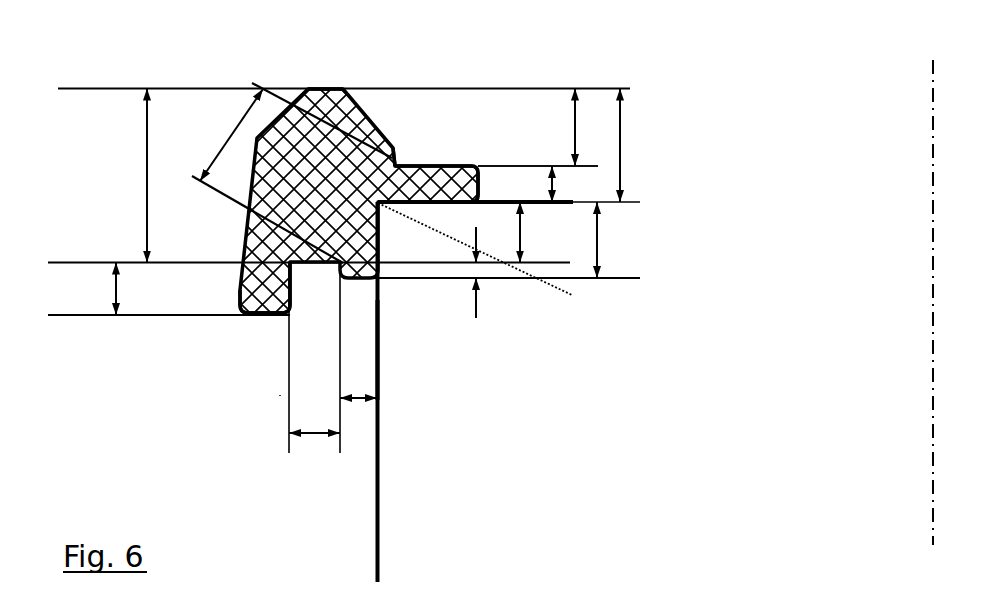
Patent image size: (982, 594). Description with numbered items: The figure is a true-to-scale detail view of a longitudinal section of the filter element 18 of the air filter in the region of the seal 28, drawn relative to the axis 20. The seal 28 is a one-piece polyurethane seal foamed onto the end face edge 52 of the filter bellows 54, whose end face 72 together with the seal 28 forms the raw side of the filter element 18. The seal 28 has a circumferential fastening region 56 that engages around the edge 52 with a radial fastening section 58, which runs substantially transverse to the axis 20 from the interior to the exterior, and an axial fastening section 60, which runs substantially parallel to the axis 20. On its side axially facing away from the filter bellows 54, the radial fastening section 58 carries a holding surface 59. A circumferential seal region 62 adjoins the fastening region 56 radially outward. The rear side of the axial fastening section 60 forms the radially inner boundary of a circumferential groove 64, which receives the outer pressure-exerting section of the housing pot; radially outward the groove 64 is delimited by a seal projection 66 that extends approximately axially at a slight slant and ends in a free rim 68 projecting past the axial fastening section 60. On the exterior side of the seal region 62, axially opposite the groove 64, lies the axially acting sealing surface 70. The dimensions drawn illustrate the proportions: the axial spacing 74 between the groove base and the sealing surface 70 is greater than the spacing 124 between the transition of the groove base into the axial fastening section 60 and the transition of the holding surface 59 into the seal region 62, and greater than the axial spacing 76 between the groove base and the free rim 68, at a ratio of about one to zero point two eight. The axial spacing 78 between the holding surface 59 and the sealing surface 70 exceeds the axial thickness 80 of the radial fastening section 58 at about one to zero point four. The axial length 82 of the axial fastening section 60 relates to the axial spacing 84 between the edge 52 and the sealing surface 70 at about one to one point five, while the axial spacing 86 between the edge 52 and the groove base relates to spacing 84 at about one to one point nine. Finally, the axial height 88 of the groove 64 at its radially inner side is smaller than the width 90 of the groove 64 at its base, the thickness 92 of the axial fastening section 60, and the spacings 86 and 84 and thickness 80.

The filter element 18 is at (78, 52).
The axis 20 is at (933, 135).
The seal 28 is at (262, 117).
The end face edge 52 is at (378, 213).
The filter bellows 54 is at (580, 518).
The fastening region 56 is at (378, 267).
The radial fastening section 58 is at (436, 165).
The holding surface 59 is at (428, 165).
The axial fastening section 60 is at (378, 330).
The seal region 62 is at (305, 190).
The groove 64 is at (312, 265).
The seal projection 66 is at (230, 293).
The free rim 68 is at (262, 313).
The sealing surface 70 is at (325, 88).
The end face 72 is at (532, 165).
The axial spacing 74 is at (145, 153).
The axial spacing 76 is at (113, 291).
The axial spacing 78 is at (573, 120).
The axial thickness 80 is at (554, 182).
The axial length 82 is at (599, 235).
The axial spacing 84 is at (622, 115).
The axial spacing 86 is at (522, 232).
The axial height 88 is at (476, 282).
The width 90 is at (310, 440).
The thickness 92 is at (363, 405).
The spacing 124 is at (228, 134).